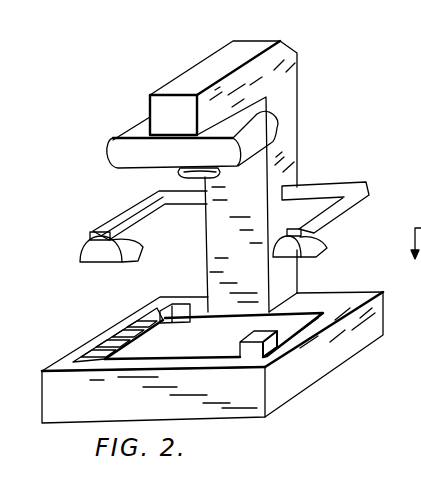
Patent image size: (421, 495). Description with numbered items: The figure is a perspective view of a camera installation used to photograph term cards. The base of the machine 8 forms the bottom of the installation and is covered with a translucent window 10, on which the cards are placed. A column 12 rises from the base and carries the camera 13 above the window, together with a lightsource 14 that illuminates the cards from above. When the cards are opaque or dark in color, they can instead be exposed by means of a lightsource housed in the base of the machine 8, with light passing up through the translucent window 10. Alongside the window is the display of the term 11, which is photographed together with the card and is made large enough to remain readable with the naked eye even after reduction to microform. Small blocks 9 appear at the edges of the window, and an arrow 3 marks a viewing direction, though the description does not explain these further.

The viewing direction of FIG. 3 is at (413, 257).
The base 8 is at (67, 416).
The locating blocks 9 is at (186, 303).
The glass plate 10 is at (205, 360).
The keyboard 11 is at (103, 340).
The column 12 is at (284, 104).
The camera head 13 is at (110, 154).
The lamps 14 is at (78, 254).